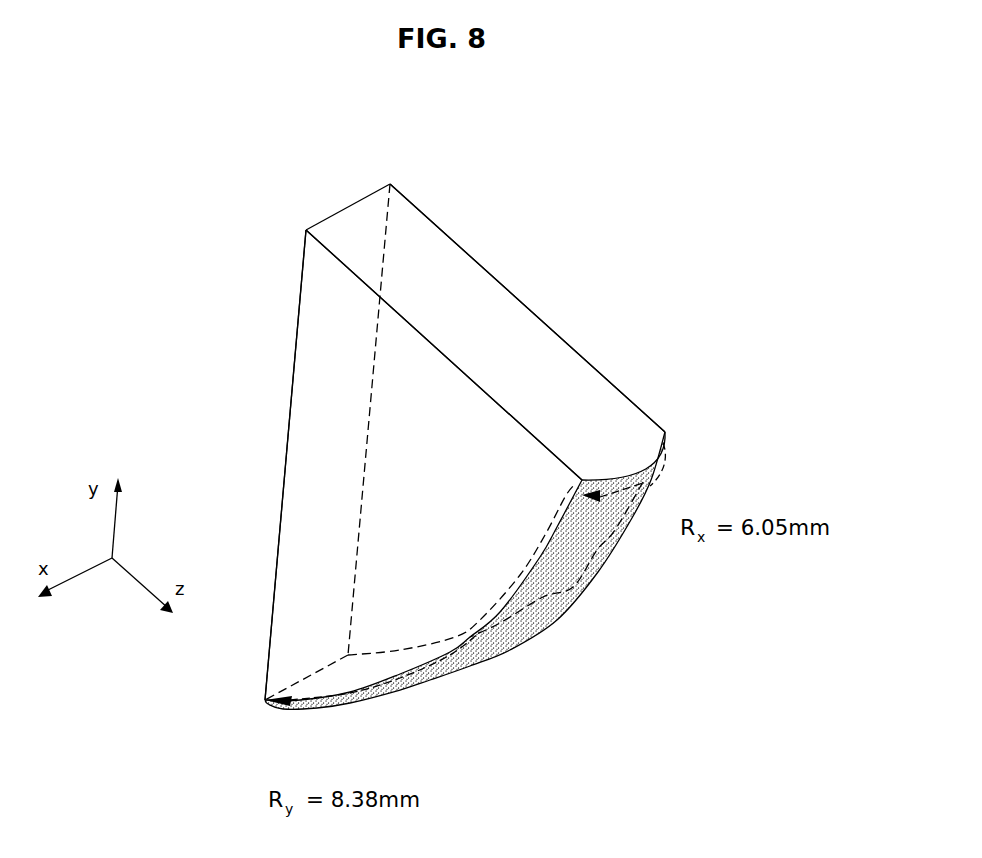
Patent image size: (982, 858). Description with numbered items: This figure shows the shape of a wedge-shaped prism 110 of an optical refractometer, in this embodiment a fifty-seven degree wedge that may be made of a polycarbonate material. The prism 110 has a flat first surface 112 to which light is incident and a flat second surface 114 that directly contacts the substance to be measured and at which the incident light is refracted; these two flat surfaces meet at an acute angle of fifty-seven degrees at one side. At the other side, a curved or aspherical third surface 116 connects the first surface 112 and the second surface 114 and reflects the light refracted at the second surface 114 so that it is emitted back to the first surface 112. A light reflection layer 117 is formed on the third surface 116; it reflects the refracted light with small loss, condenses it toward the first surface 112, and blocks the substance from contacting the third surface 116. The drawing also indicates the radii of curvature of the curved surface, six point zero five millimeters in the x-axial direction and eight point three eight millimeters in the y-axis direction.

The prism 110 is at (596, 266).
The first surface 112 is at (280, 512).
The second surface 114 is at (596, 400).
The third surface 116 is at (357, 680).
The light reflection layer 117 is at (468, 663).